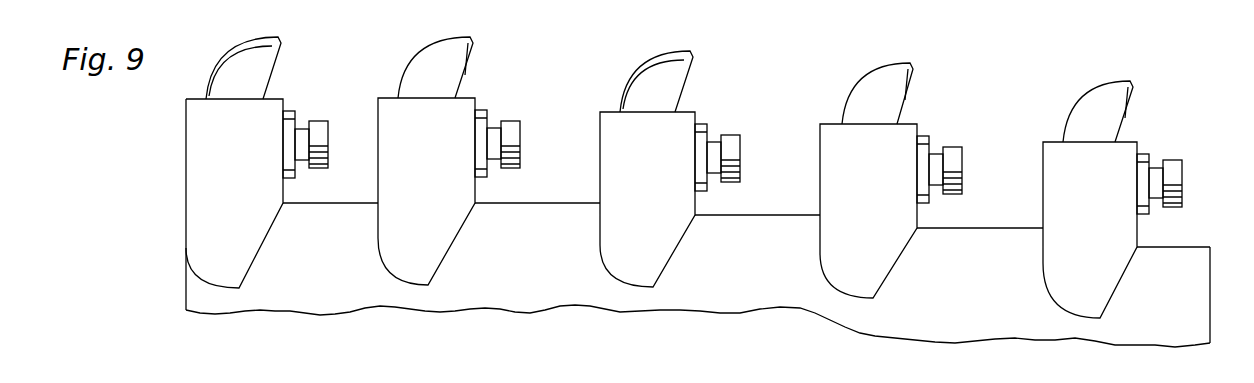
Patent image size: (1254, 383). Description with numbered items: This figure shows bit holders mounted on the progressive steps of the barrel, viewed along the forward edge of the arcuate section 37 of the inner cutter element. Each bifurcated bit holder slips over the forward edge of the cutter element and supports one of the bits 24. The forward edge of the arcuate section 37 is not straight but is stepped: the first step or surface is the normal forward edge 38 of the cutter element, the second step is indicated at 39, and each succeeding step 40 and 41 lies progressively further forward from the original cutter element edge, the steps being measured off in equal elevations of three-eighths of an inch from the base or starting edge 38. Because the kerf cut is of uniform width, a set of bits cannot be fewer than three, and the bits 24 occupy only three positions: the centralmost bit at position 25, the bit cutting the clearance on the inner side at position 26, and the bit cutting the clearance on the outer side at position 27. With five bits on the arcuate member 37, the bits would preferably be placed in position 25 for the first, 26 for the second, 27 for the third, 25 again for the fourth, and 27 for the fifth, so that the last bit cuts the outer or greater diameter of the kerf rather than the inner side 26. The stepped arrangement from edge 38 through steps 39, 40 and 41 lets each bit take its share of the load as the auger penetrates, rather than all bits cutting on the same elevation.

The bits 24 is at (1102, 92).
The centralmost bit position 25 is at (455, 58).
The inner clearance bit position 26 is at (898, 83).
The outer clearance bit position 27 is at (268, 61).
The arcuate section 37 is at (1207, 264).
The normal forward edge 38 is at (1158, 247).
The second step 39 is at (982, 228).
The third step 40 is at (760, 215).
The fourth step 41 is at (528, 203).